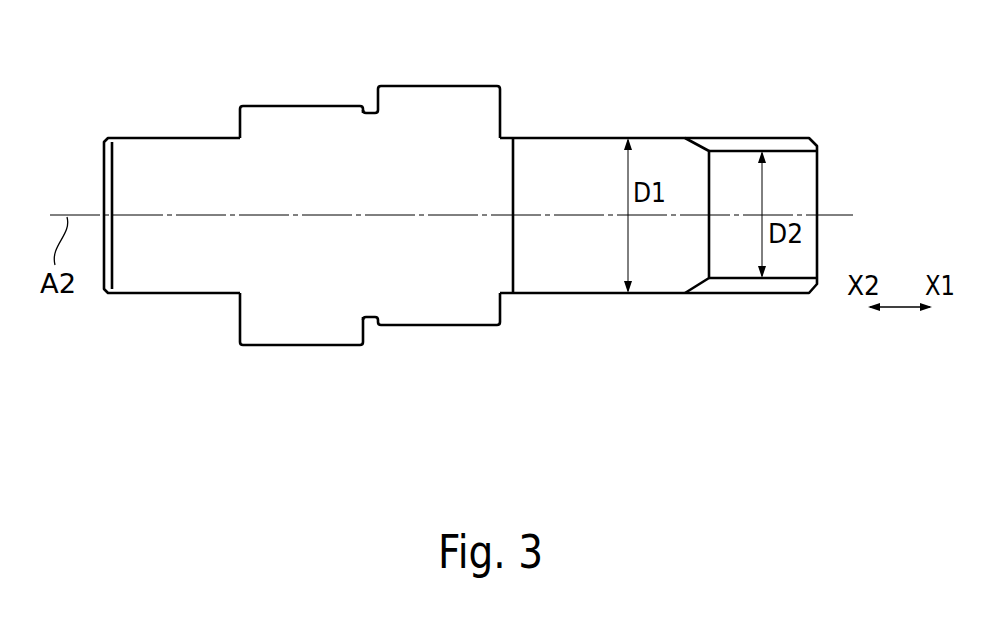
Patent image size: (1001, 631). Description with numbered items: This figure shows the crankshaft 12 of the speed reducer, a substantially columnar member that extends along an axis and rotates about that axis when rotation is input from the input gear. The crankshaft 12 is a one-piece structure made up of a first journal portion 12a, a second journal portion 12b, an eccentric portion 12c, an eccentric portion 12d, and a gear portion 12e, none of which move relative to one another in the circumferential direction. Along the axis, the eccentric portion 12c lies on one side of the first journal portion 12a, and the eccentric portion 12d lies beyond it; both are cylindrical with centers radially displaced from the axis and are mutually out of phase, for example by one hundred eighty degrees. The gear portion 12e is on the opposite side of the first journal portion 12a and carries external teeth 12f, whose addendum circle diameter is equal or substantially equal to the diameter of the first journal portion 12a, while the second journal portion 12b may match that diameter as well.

The crankshaft 12 is at (578, 78).
The first journal portion 12a is at (592, 267).
The second journal portion 12b is at (127, 179).
The eccentric portion 12c is at (437, 300).
The eccentric portion 12d is at (305, 312).
The gear portion 12e is at (790, 188).
The external teeth 12f is at (742, 287).